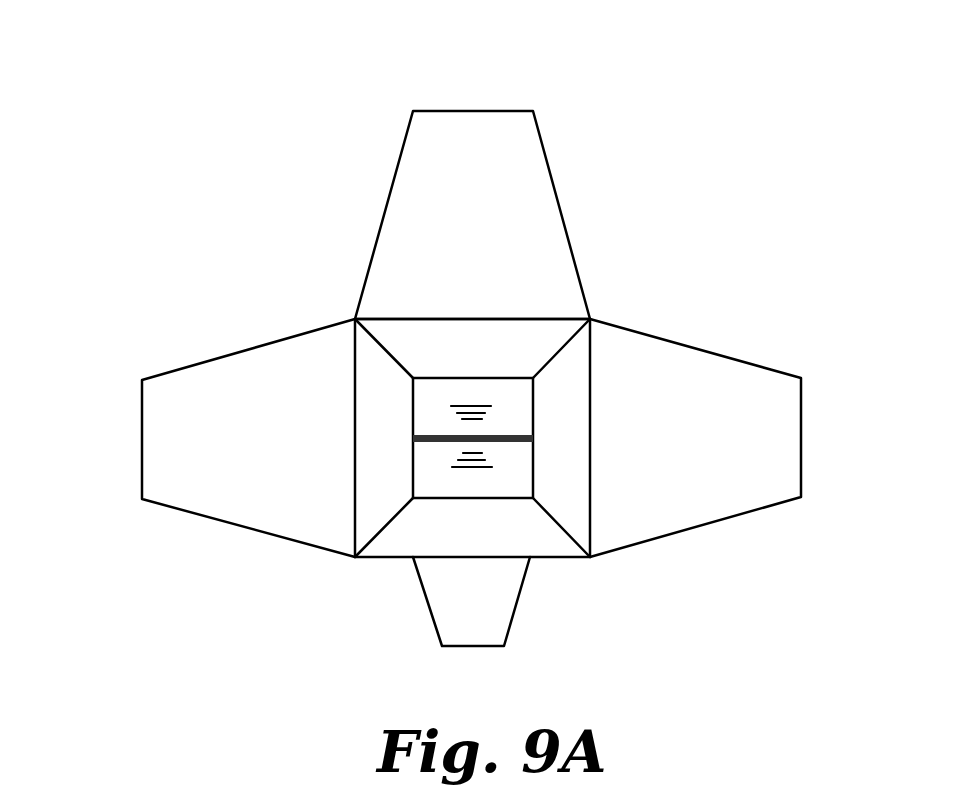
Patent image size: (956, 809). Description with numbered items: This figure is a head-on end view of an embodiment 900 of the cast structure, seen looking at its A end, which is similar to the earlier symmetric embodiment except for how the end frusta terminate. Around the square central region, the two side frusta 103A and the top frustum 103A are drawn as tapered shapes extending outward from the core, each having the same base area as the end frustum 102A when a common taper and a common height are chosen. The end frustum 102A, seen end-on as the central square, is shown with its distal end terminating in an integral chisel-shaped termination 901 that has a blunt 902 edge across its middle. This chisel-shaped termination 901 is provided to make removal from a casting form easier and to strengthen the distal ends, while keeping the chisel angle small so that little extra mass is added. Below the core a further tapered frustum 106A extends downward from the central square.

The fuel cell assembly 900 is at (248, 68).
The side frusta 103A is at (207, 362).
The end frustum 102A is at (543, 544).
The bottom tapered member 106A is at (432, 614).
The chisel-shaped termination 901 is at (423, 400).
The blunt 902 is at (414, 439).